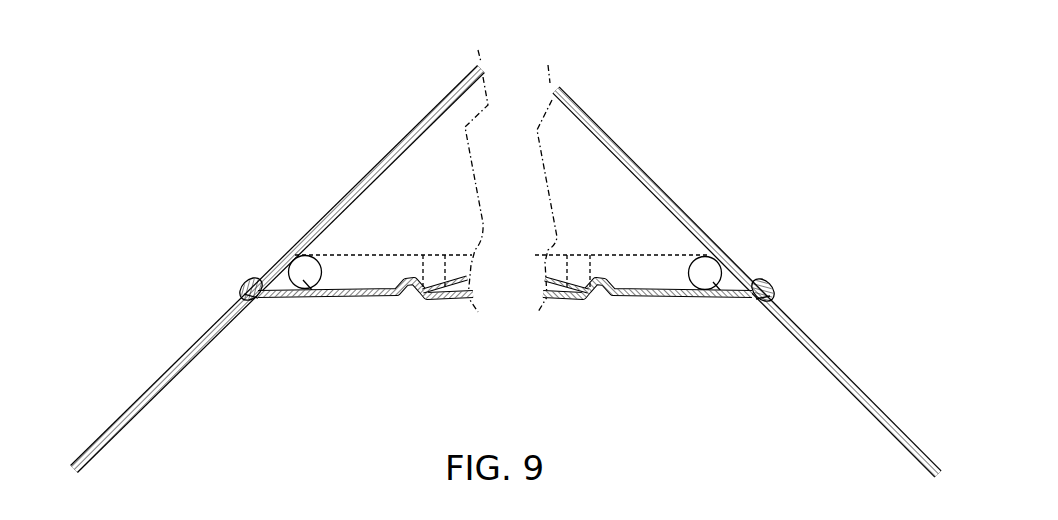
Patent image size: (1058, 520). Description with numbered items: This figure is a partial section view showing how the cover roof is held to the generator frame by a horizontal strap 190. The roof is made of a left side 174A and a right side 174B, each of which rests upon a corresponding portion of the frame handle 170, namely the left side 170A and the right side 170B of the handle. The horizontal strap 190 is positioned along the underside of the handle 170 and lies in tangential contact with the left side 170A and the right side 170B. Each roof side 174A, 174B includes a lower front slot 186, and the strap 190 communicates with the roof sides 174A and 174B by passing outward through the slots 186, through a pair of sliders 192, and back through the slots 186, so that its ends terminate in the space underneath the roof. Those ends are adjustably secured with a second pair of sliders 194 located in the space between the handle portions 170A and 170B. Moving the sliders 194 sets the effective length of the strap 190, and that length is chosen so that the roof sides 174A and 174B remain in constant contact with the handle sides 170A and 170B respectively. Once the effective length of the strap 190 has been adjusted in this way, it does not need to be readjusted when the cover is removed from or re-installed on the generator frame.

The handle 170 is at (378, 255).
The left side of handle 170A is at (698, 300).
The right side of handle 170B is at (322, 302).
The left side of roof 174A is at (660, 186).
The right side of roof 174B is at (338, 203).
The lower front slot 186 is at (251, 301).
The horizontal strap 190 is at (447, 302).
The slider 192 is at (238, 289).
The slider 194 is at (424, 255).